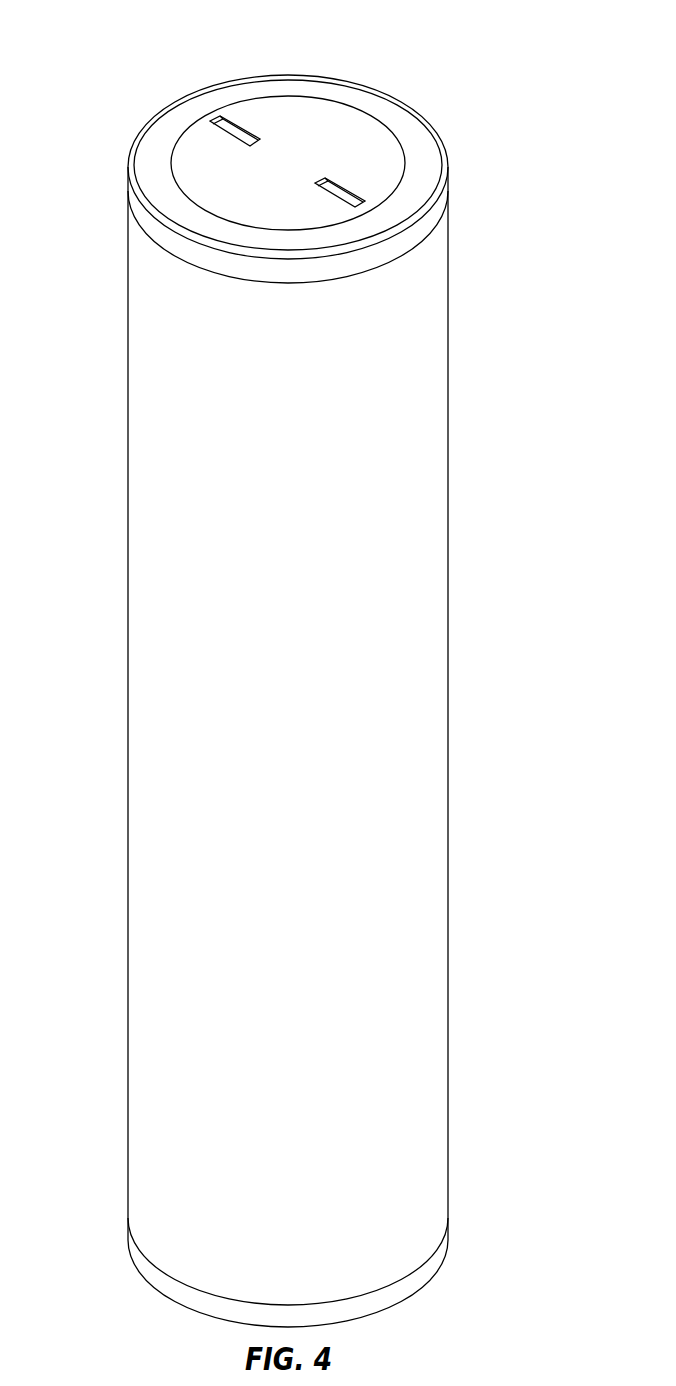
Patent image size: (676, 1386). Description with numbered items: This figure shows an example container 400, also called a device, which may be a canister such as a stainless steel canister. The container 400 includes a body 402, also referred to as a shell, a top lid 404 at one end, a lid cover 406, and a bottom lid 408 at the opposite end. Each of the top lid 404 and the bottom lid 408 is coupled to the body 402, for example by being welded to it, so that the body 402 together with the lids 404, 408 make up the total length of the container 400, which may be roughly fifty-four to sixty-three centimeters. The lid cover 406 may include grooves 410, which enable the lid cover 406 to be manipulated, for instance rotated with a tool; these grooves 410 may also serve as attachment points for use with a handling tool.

The container 400 is at (160, 38).
The body 402 is at (432, 614).
The lid 404 is at (433, 205).
The lid cover 406 is at (382, 165).
The lid 408 is at (433, 1260).
The grooves 410 is at (235, 122).